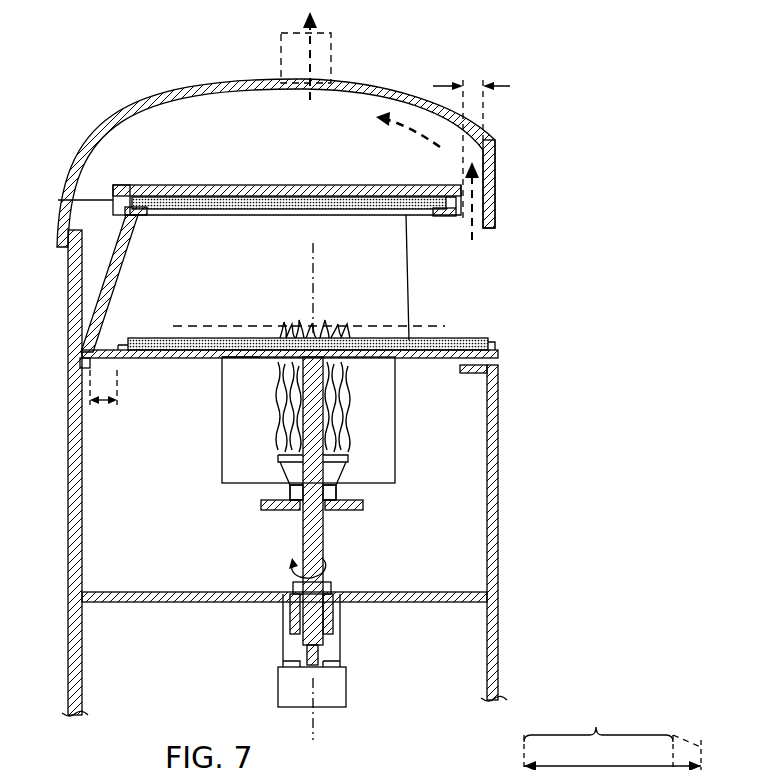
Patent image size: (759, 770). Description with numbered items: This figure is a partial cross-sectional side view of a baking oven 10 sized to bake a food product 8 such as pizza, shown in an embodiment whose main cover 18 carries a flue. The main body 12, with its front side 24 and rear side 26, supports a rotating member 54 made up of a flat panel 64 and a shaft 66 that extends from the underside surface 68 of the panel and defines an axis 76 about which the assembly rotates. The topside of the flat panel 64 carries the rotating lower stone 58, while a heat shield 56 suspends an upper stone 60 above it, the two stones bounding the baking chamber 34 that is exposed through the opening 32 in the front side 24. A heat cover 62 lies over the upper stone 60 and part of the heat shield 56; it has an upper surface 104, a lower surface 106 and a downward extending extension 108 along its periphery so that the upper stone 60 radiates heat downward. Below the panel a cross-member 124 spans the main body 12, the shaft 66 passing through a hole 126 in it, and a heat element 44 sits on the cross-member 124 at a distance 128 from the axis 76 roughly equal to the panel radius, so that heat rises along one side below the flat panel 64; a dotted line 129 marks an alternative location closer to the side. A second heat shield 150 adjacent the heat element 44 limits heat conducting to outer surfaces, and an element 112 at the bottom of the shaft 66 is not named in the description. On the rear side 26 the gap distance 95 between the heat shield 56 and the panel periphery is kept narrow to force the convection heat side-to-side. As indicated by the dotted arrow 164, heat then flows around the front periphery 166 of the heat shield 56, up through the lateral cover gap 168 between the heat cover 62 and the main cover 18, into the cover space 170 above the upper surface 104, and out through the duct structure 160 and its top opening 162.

The baking oven 10 is at (648, 52).
The main body 12 is at (520, 437).
The main cover 18 is at (140, 118).
The front side 24 is at (500, 506).
The rear side 26 is at (72, 469).
The opening 32 is at (491, 229).
The baking chamber 34 is at (279, 266).
The heat element 44 is at (348, 473).
The rotating member 54 is at (196, 370).
The heat shield 56 is at (110, 232).
The lower stone 58 is at (431, 337).
The upper stone 60 is at (187, 215).
The heat cover 62 is at (326, 174).
The flat panel 64 is at (158, 370).
The shaft 66 is at (325, 553).
The underside surface 68 is at (245, 362).
The axis 76 is at (313, 725).
The food product 8 is at (193, 327).
The gap distance 95 is at (104, 405).
The upper surface 104 is at (163, 185).
The lower surface 106 is at (241, 194).
The downward extending extension 108 is at (58, 200).
The motor 112 is at (347, 690).
The cross-member 124 is at (363, 505).
The hole 126 is at (325, 504).
The distance 128 is at (392, 681).
The dotted line 129 is at (612, 765).
The second heat shield 150 is at (395, 418).
The duct structure 160 is at (281, 62).
The top opening 162 is at (284, 47).
The dotted arrow 164 is at (311, 65).
The front periphery 166 is at (409, 290).
The lateral cover gap 168 is at (508, 87).
The cover space 170 is at (290, 137).